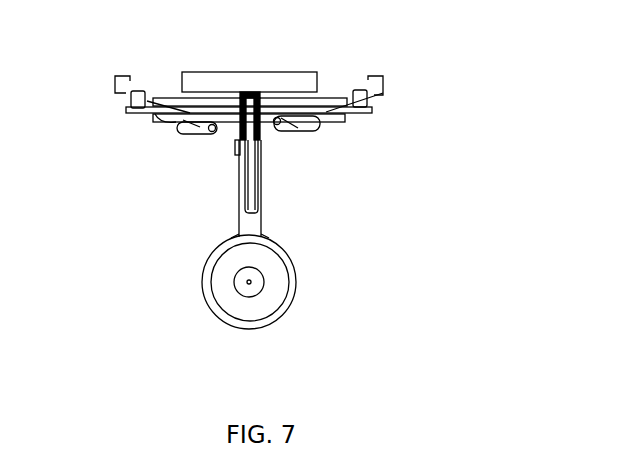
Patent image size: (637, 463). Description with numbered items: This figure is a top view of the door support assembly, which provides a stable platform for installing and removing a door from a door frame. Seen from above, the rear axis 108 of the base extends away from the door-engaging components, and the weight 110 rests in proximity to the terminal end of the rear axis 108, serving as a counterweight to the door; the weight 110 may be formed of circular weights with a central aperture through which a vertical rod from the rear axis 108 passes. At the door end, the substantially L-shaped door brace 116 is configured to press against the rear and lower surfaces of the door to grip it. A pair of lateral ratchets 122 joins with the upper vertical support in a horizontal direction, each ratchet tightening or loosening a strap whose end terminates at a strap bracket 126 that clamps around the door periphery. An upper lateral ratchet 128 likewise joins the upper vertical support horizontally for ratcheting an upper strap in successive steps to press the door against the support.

The rear axis 108 is at (262, 181).
The weight 110 is at (299, 283).
The door brace 116 is at (229, 72).
The lateral ratchet 122 is at (197, 133).
The strap bracket 126 is at (115, 78).
The upper lateral ratchet 128 is at (383, 93).